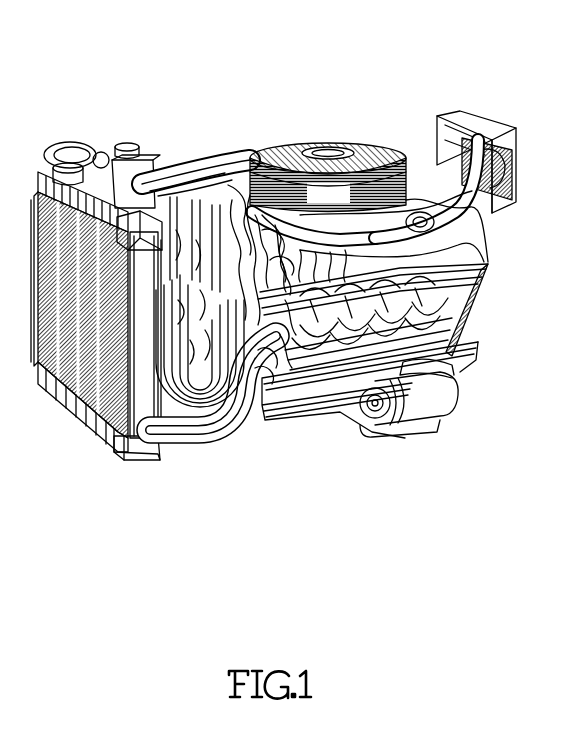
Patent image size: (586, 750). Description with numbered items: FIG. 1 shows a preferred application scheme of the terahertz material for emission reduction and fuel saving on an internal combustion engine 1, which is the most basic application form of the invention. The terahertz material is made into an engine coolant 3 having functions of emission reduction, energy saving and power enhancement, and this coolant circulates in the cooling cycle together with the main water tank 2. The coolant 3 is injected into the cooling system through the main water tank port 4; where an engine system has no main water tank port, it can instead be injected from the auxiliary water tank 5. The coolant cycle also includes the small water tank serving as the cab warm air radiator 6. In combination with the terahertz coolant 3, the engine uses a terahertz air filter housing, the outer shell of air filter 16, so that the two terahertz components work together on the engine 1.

The internal combustion engine 1 is at (328, 382).
The main water tank 2 is at (117, 462).
The coolant/cooling cycle with terahertz material 3 is at (205, 432).
The main water tank port 4 is at (85, 172).
The auxiliary water tank 5 is at (143, 150).
The small water tank-cab warm air radiator 6 is at (473, 116).
The outer shell of air filter 16 is at (350, 136).